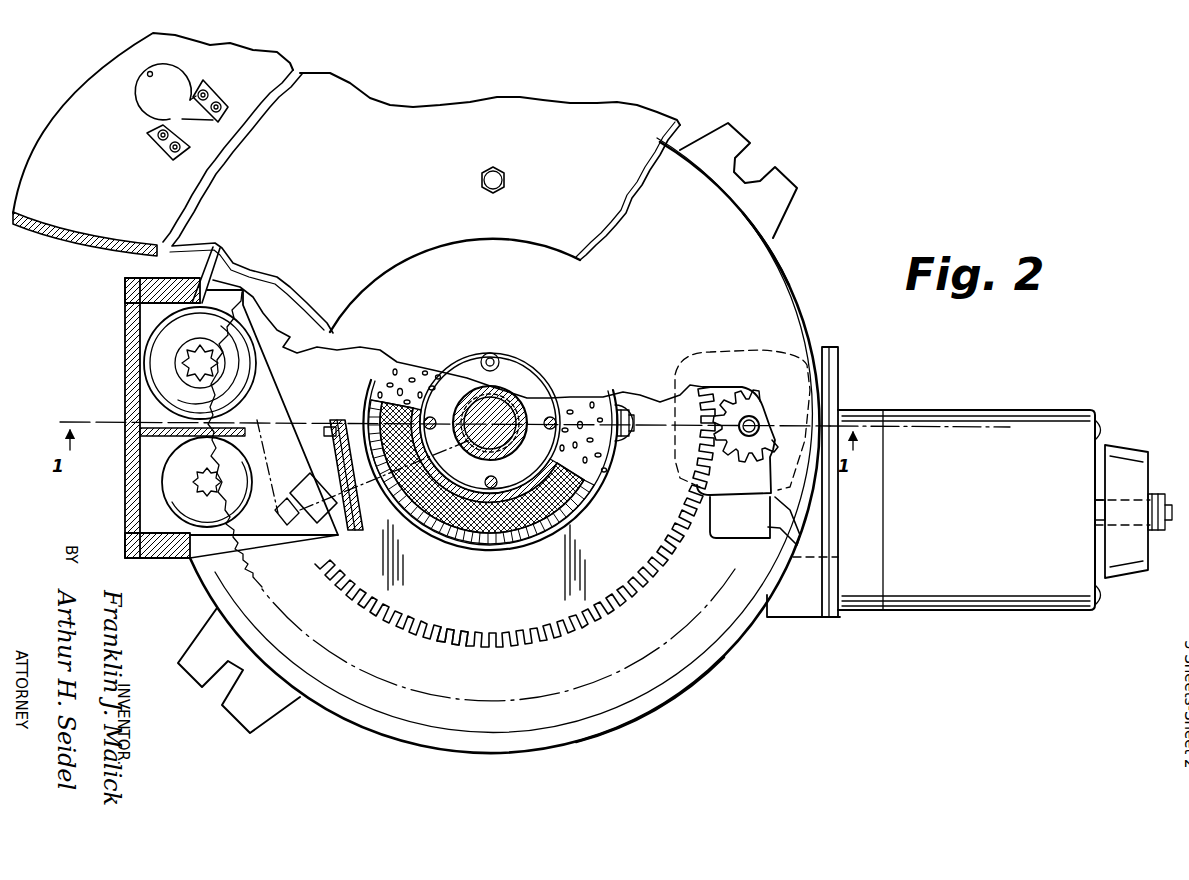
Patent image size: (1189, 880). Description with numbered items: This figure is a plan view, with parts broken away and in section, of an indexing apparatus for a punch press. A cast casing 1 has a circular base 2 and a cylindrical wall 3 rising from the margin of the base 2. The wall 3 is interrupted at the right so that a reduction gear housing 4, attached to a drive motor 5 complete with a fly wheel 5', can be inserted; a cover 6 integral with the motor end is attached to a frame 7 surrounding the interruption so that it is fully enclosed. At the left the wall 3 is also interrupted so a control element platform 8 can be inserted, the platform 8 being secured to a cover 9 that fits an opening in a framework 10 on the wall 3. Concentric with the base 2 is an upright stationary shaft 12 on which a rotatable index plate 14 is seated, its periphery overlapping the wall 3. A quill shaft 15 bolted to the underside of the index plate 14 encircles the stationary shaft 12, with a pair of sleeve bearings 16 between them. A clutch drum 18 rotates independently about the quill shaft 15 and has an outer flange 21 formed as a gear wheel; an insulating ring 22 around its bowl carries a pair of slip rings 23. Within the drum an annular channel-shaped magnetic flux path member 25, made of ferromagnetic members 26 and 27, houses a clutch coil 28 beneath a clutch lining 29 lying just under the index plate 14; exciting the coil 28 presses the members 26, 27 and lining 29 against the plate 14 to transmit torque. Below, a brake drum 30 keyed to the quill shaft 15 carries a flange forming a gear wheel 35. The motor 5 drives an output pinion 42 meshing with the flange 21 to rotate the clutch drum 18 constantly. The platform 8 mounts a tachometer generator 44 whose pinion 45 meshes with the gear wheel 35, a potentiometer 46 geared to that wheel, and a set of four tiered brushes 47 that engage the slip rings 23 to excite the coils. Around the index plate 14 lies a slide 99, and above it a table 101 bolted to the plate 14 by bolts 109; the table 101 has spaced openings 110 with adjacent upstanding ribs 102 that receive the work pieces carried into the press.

The casing 1 is at (627, 723).
The circular base 2 is at (578, 724).
The cylindrical wall 3 is at (678, 693).
The reduction gear housing 4 is at (728, 522).
The drive motor 5 is at (971, 481).
The fly wheel 5' is at (1133, 522).
The cover 6 is at (840, 378).
The frame 7 is at (783, 607).
The control element platform 8 is at (262, 540).
The cover 9 is at (125, 490).
The framework 10 is at (152, 560).
The stationary shaft 12 is at (492, 405).
The index plate 14 is at (765, 279).
The quill shaft 15 is at (507, 458).
The sleeve bearings 16 is at (500, 403).
The clutch drum 18 is at (510, 600).
The outer flange 21 is at (433, 634).
The insulating ring 22 is at (325, 432).
The slip rings 23 is at (333, 456).
The magnetic flux path member 25 is at (590, 509).
The ferro magnetic member 26 is at (535, 540).
The ferro magnetic member 27 is at (462, 470).
The clutch coil 28 is at (497, 533).
The clutch lining 29 is at (598, 465).
The brake drum 30 is at (360, 680).
The gear wheel 35 is at (245, 556).
The output pinion 42 is at (745, 408).
The tachometer generator 44 is at (160, 355).
The pinion 45 is at (194, 349).
The potentiometer 46 is at (175, 468).
The brushes 47 is at (318, 481).
The slide 99 is at (70, 242).
The table 101 is at (625, 118).
The upstanding ribs 102 is at (215, 88).
The bolts 109 is at (500, 177).
The openings 110 is at (149, 72).